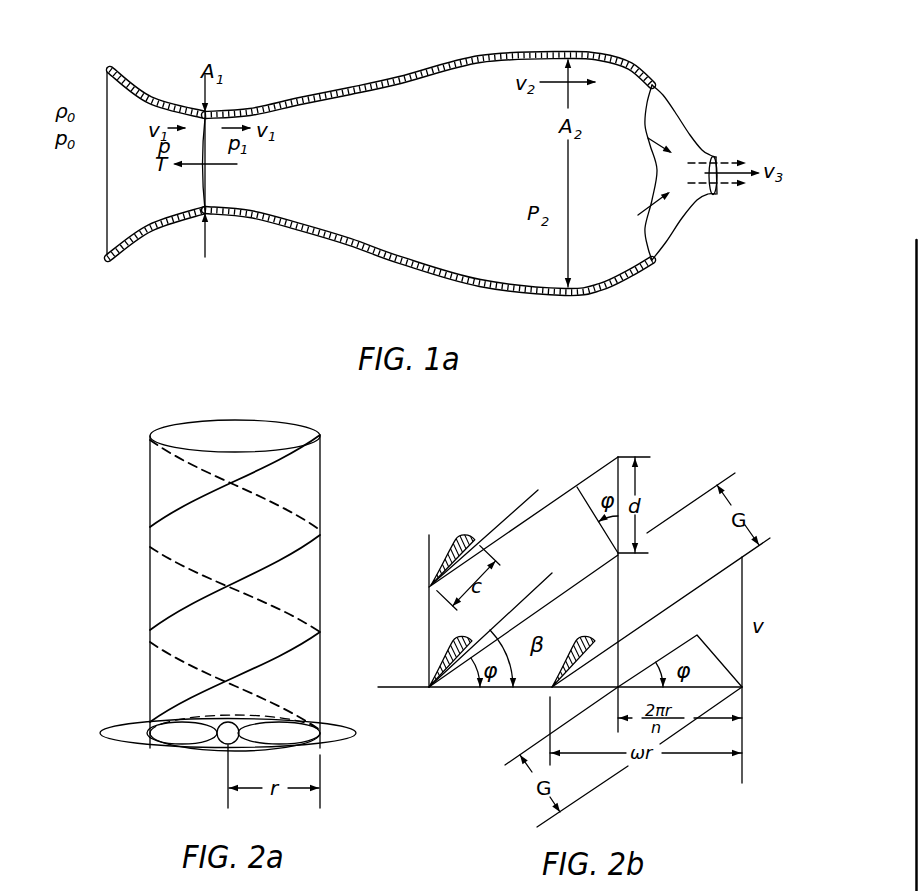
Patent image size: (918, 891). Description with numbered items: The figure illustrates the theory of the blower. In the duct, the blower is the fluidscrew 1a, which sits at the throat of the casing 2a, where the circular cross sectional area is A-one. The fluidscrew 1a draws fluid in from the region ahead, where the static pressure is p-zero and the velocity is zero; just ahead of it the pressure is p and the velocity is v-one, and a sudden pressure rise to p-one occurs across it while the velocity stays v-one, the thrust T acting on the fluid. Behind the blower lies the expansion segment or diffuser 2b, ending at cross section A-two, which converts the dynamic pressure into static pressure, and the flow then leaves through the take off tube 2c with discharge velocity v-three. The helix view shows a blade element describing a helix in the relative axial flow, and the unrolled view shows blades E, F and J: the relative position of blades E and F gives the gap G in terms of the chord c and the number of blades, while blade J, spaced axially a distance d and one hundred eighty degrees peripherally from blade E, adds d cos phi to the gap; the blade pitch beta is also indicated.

In FIG. 1A, the casing 2a is at (122, 82).
In FIG. 1A, the expansion segment or diffuser 2b is at (482, 57).
In FIG. 1A, the take off tube 2c is at (704, 150).
In FIG. 1A, the fluidscrew 1a is at (207, 195).
In FIG. 2B, the blade J is at (446, 553).
In FIG. 2B, the blade F is at (441, 657).
In FIG. 2B, the blade E is at (553, 670).